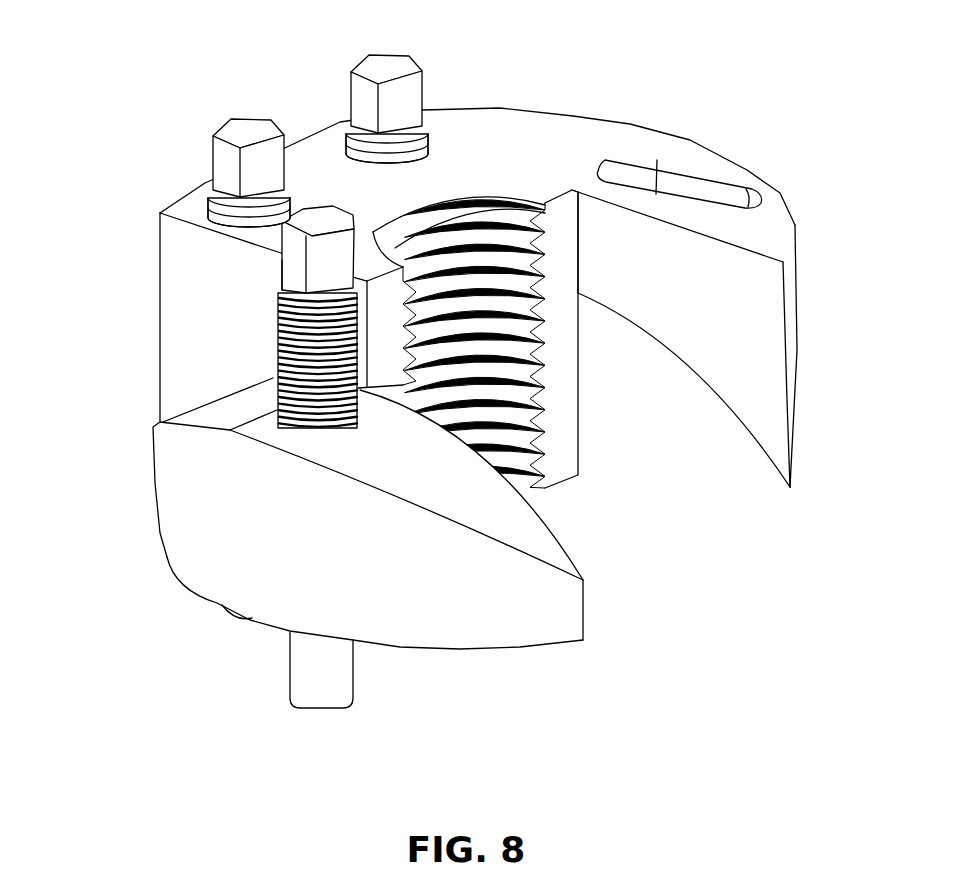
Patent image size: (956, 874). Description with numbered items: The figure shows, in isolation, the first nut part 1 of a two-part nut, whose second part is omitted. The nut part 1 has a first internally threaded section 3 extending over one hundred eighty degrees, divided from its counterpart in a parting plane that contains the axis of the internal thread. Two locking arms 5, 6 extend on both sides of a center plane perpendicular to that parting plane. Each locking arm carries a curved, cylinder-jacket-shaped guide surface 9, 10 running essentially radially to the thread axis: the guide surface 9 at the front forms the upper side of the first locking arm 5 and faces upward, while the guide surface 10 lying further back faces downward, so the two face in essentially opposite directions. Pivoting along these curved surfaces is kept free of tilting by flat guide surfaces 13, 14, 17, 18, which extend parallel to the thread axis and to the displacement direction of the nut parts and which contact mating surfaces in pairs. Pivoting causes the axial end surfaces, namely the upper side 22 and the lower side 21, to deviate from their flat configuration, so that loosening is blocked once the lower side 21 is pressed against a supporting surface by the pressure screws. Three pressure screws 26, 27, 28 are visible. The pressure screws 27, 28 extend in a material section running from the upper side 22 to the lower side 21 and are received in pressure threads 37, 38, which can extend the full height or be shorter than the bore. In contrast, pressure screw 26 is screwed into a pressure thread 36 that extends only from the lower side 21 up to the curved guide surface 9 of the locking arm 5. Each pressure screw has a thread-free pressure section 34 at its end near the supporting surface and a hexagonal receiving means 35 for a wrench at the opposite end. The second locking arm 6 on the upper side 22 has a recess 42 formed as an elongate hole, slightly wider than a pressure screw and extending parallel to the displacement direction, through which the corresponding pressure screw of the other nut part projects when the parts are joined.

The first nut part 1 is at (167, 200).
The first internally threaded section 3 is at (493, 376).
The first locking arm 5 is at (503, 617).
The second locking arm 6 is at (785, 207).
The curved guide surface 9 is at (475, 482).
The curved guide surface 10 is at (690, 365).
The flat guide surface 13 is at (588, 588).
The flat guide surface 14 is at (722, 342).
The flat guide surface 17 is at (198, 336).
The flat guide surface 18 is at (583, 412).
The lower side 21 is at (403, 665).
The upper side 22 is at (565, 150).
The pressure screw 26 is at (325, 222).
The pressure screw 27 is at (249, 133).
The pressure screw 28 is at (384, 78).
The pressure section 34 is at (318, 682).
The receiving means 35 is at (293, 263).
The pressure thread 36 is at (268, 417).
The pressure thread 37 is at (203, 212).
The pressure thread 38 is at (432, 150).
The recess 42 is at (692, 188).